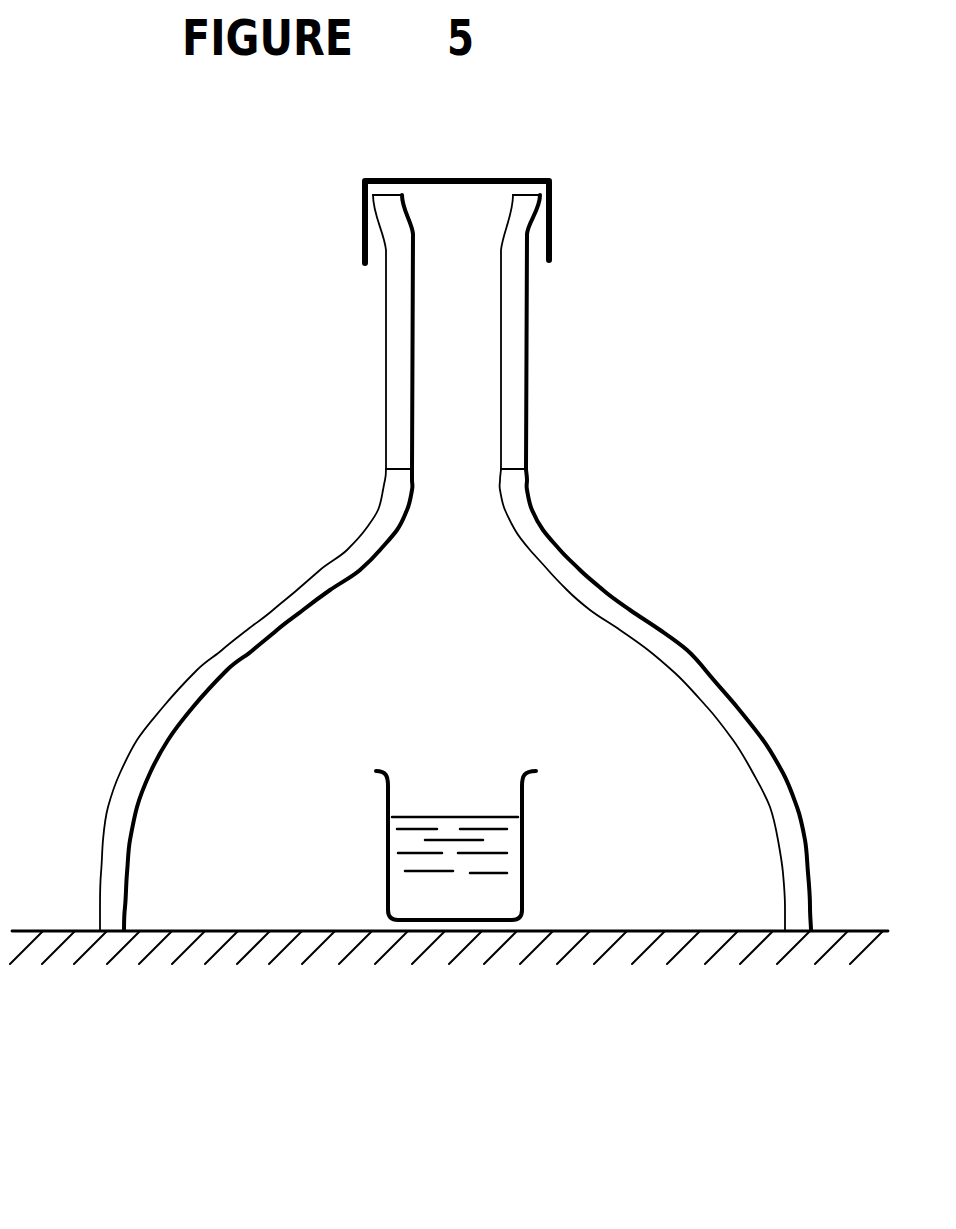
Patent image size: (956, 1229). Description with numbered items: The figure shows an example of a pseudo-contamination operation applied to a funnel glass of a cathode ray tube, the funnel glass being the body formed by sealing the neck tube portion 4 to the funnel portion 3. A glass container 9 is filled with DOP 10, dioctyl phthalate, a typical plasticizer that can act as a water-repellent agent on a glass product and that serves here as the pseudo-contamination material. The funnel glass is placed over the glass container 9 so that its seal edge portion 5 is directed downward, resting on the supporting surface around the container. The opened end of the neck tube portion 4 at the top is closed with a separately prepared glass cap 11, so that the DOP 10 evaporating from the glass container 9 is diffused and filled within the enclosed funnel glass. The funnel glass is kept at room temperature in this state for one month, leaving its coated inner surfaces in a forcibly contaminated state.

The funnel portion 3 is at (690, 661).
The neck tube portion 4 is at (512, 355).
The seal edge portion 5 is at (797, 932).
The glass container 9 is at (386, 787).
The DOP 10 is at (483, 885).
The glass cap 11 is at (552, 208).